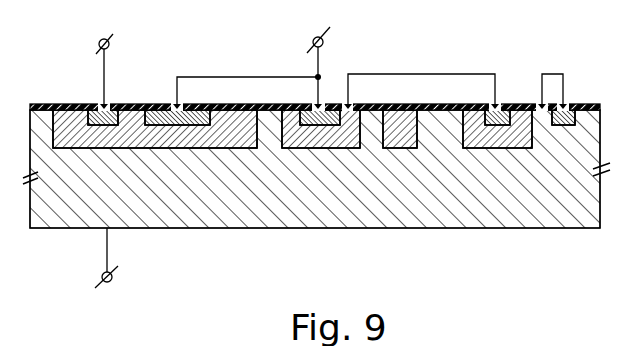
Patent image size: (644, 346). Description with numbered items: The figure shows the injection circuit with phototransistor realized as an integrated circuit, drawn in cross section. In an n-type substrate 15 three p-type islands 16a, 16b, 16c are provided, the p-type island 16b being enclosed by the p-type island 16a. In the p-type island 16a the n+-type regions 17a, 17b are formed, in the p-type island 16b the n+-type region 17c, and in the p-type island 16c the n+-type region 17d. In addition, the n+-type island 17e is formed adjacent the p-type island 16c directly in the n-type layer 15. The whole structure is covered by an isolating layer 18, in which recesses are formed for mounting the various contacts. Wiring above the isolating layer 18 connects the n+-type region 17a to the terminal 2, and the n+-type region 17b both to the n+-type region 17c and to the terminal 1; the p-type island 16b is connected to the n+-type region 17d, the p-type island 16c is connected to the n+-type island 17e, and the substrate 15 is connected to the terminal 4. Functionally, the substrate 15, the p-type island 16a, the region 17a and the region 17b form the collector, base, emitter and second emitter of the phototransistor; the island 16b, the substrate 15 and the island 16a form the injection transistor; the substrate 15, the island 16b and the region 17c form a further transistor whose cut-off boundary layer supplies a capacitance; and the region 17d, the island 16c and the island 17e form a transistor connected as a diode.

The terminal 1 is at (324, 42).
The terminal 2 is at (110, 44).
The terminal 4 is at (113, 280).
The n-type substrate 15 is at (416, 198).
The p-type island 16a is at (72, 125).
The p-type island 16b is at (292, 125).
The p-type island 16c is at (473, 128).
The n+-type region 17a is at (110, 122).
The n+-type region 17b is at (192, 125).
The n+-type region 17c is at (322, 125).
The n+-type region 17d is at (505, 128).
The n+-type island 17e is at (563, 125).
The isolating layer 18 is at (42, 104).